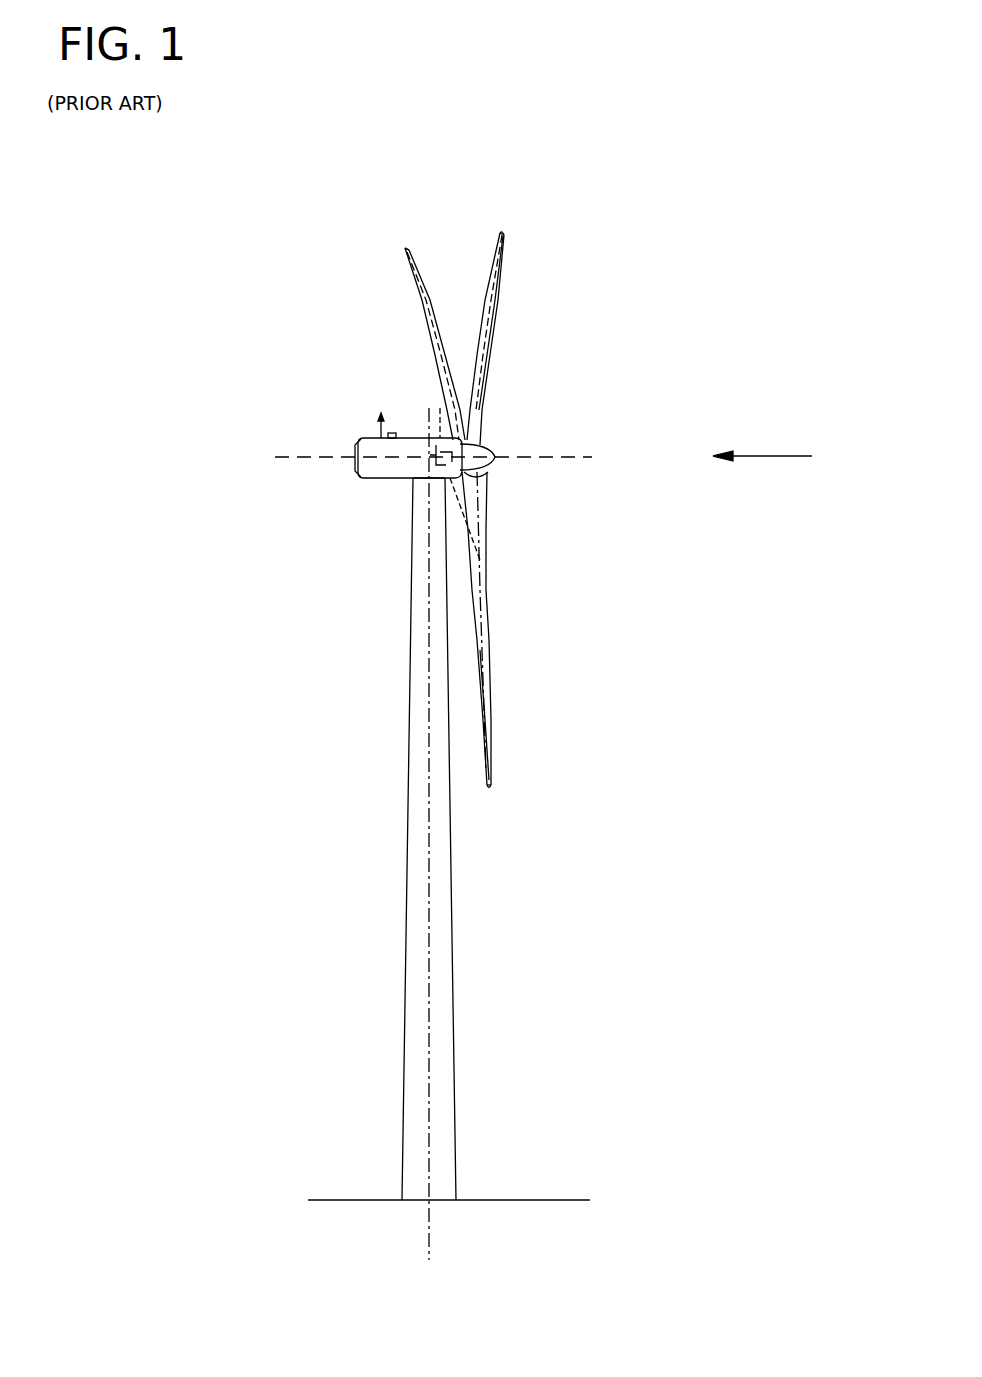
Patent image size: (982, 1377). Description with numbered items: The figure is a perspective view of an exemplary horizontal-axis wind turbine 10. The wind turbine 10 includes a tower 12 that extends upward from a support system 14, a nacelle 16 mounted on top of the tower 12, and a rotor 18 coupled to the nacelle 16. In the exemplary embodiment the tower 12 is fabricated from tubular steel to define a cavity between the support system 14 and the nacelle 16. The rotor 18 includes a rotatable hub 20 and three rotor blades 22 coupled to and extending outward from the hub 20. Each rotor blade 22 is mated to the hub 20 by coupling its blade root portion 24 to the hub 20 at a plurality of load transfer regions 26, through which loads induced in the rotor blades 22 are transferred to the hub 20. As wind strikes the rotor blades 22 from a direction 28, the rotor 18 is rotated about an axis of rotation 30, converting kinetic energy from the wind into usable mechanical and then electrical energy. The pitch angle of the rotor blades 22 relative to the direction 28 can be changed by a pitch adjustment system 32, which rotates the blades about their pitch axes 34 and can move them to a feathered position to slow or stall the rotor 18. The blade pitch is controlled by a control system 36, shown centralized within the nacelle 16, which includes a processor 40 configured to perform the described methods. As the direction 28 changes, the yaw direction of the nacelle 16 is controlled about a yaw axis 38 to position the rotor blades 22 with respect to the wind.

The wind turbine 10 is at (196, 258).
The tower 12 is at (405, 985).
The support system 14 is at (362, 1200).
The nacelle 16 is at (385, 478).
The rotor 18 is at (502, 365).
The rotatable hub 20 is at (497, 452).
The rotor blade 22 is at (420, 312).
The blade root portion 24 is at (482, 555).
The load transfer regions 26 is at (472, 476).
The direction 28 is at (782, 456).
The axis of rotation 30 is at (560, 458).
The pitch adjustment system 32 is at (480, 505).
The pitch axes 34 is at (403, 248).
The control system 36 is at (428, 490).
The yaw axis 38 is at (430, 878).
The processor 40 is at (440, 407).